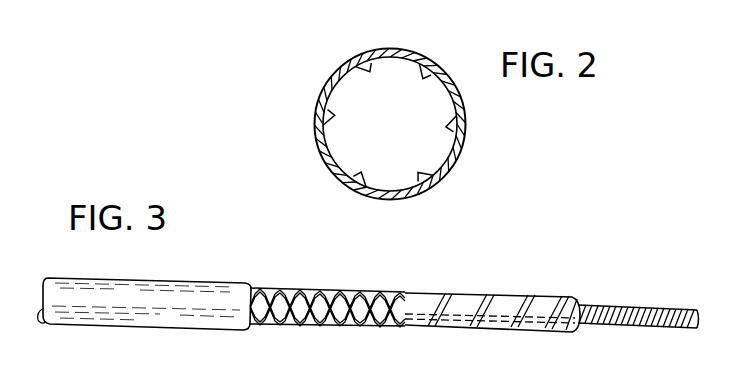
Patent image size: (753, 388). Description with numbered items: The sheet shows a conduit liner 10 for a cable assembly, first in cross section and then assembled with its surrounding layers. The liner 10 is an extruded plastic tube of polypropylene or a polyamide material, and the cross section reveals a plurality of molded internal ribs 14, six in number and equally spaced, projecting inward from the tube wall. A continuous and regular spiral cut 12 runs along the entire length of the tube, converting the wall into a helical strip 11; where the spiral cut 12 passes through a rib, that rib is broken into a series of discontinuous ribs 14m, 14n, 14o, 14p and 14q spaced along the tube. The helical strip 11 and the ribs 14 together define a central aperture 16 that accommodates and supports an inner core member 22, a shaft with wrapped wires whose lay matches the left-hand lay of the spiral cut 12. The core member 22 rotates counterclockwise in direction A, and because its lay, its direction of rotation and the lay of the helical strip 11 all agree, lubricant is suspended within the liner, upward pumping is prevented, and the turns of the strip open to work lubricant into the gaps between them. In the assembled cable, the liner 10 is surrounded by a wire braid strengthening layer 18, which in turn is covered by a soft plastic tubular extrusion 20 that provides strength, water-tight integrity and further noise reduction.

In FIG. 2, the conduit liner 10 is at (322, 63).
In FIG. 3, the conduit liner 10 is at (513, 283).
In FIG. 2, the helical strip 11 is at (353, 190).
In FIG. 3, the helical strip 11 is at (437, 308).
In FIG. 2, the spiral cut 12 is at (397, 50).
In FIG. 3, the spiral cut 12 is at (440, 308).
In FIG. 2, the internal ribs 14 is at (330, 107).
In FIG. 3, the discontinuous rib 14m is at (414, 320).
In FIG. 3, the discontinuous rib 14n is at (452, 322).
In FIG. 3, the discontinuous rib 14o is at (498, 318).
In FIG. 3, the discontinuous rib 14p is at (528, 322).
In FIG. 3, the discontinuous rib 14q is at (568, 330).
In FIG. 2, the central aperture 16 is at (372, 135).
In FIG. 3, the wire braid strengthening layer 18 is at (368, 295).
In FIG. 3, the soft plastic tubular extrusion 20 is at (155, 283).
In FIG. 3, the inner core member 22 is at (620, 305).
In FIG. 3, the direction of rotation A is at (650, 296).